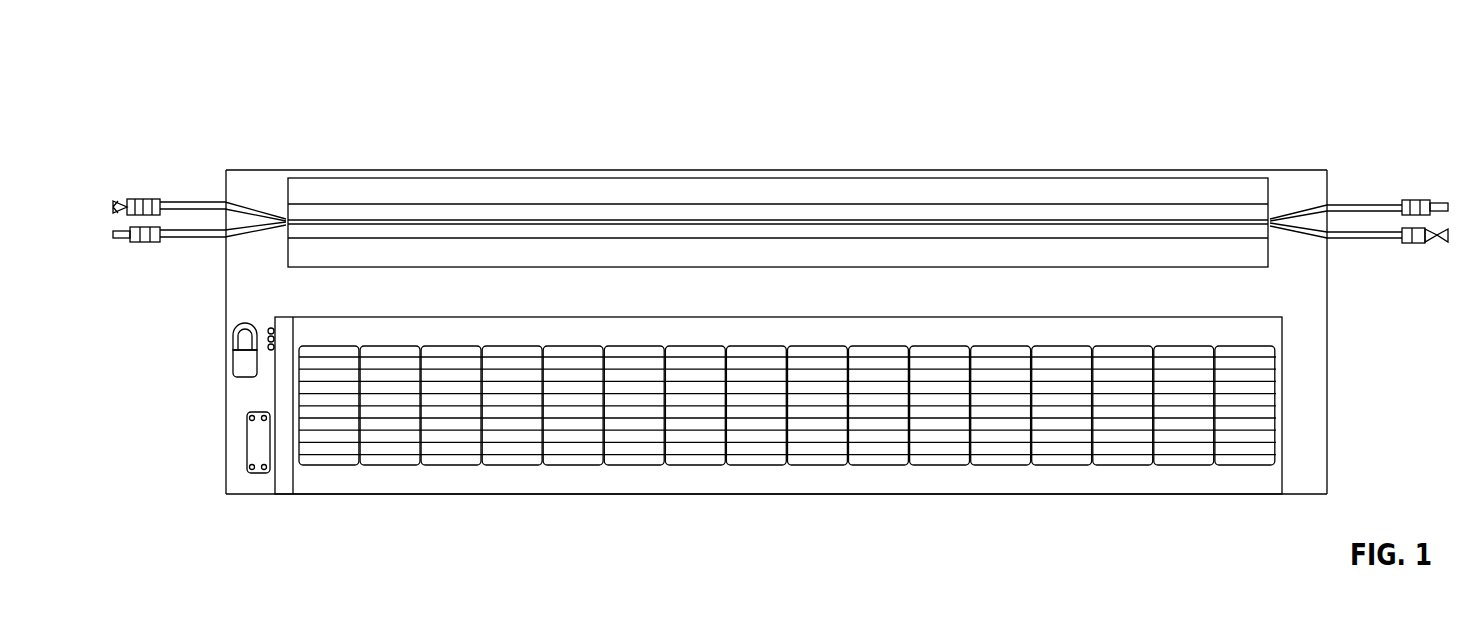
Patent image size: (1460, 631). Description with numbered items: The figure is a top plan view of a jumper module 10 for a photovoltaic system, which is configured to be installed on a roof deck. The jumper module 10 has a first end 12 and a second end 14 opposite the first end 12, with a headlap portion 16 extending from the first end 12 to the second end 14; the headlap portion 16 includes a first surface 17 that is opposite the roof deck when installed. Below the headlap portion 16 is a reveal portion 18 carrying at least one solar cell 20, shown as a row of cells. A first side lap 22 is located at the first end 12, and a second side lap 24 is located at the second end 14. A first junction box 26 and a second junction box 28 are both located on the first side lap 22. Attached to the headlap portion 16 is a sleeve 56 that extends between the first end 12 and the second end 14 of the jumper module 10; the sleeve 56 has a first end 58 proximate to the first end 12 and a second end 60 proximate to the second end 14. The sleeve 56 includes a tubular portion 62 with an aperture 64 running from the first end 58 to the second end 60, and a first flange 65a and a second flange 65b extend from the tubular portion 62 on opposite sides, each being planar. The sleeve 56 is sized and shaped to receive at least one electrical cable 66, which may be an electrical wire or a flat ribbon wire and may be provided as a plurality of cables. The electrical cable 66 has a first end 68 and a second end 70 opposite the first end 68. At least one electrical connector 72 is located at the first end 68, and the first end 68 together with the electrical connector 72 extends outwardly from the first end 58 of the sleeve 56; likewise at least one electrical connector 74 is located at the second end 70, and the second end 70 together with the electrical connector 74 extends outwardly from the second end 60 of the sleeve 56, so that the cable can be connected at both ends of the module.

The jumper module 10 is at (1358, 82).
The first end 12 is at (225, 458).
The second end 14 is at (1328, 437).
The headlap portion 16 is at (250, 185).
The first surface 17 is at (1280, 178).
The reveal portion 18 is at (622, 433).
The solar cell 20 is at (437, 437).
The first side lap 22 is at (248, 402).
The second side lap 24 is at (1318, 471).
The first junction box 26 is at (255, 452).
The second junction box 28 is at (233, 350).
The sleeve 56 is at (876, 218).
The first end 58 is at (284, 221).
The second end 60 is at (1272, 190).
The tubular portion 62 is at (460, 215).
The aperture 64 is at (284, 232).
The first flange 65a is at (657, 193).
The second flange 65b is at (849, 248).
The electrical cable 66 is at (1275, 223).
The first end 68 is at (273, 206).
The second end 70 is at (1278, 213).
The electrical connector 72 is at (117, 206).
The electrical connector 74 is at (1420, 200).